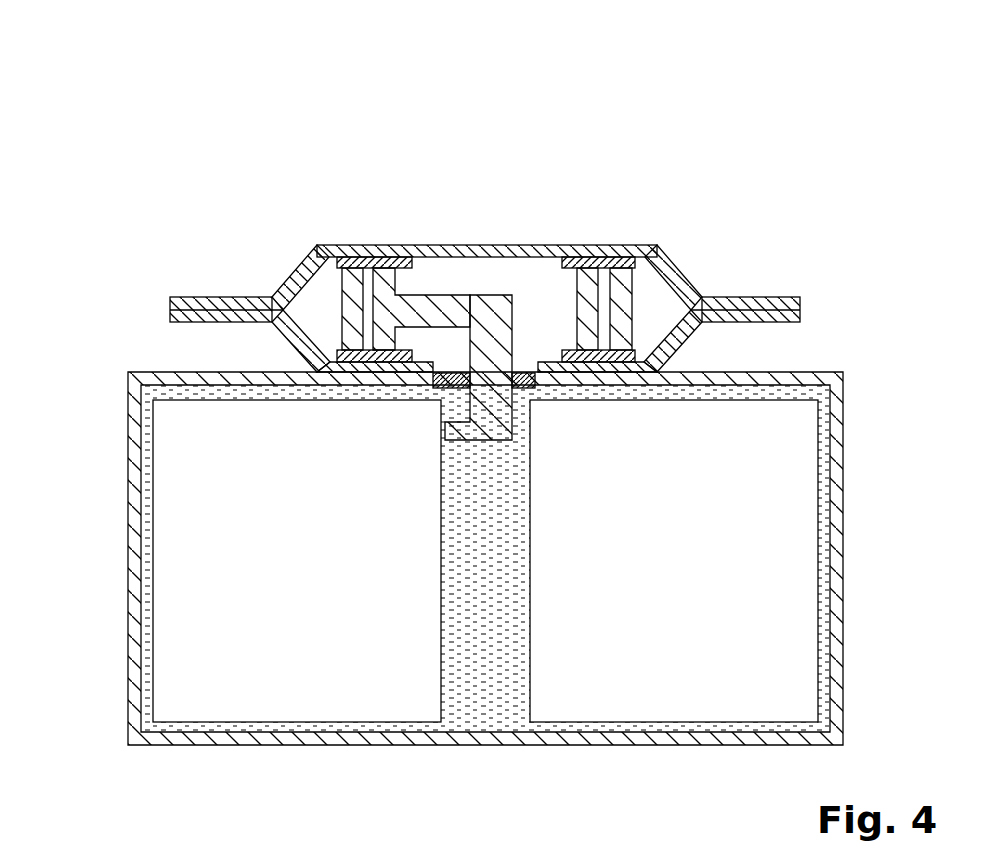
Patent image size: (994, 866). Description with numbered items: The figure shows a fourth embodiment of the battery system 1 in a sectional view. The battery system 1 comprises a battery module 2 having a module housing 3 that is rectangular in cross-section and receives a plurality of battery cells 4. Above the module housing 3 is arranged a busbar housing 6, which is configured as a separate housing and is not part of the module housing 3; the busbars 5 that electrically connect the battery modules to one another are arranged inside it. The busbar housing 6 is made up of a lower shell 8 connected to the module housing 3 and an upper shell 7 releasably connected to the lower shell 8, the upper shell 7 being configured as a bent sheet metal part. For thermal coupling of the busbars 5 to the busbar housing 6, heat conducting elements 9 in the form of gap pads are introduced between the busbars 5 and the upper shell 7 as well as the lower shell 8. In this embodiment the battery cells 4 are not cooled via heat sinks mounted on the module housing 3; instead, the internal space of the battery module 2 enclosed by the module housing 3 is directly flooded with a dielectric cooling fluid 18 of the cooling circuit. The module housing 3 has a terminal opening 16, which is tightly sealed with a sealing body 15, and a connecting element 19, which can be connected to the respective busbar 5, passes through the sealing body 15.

The battery system 1 is at (180, 97).
The battery module 2 is at (114, 567).
The module housing 3 is at (393, 737).
The battery cell 4 is at (290, 700).
The busbar 5 is at (385, 292).
The busbar housing 6 is at (643, 228).
The upper shell 7 is at (292, 273).
The lower shell 8 is at (182, 312).
The heat conducting element 9 is at (585, 266).
The sealing body 15 is at (453, 380).
The terminal opening 16 is at (520, 402).
The dielectric cooling fluid 18 is at (505, 680).
The connecting element 19 is at (489, 418).